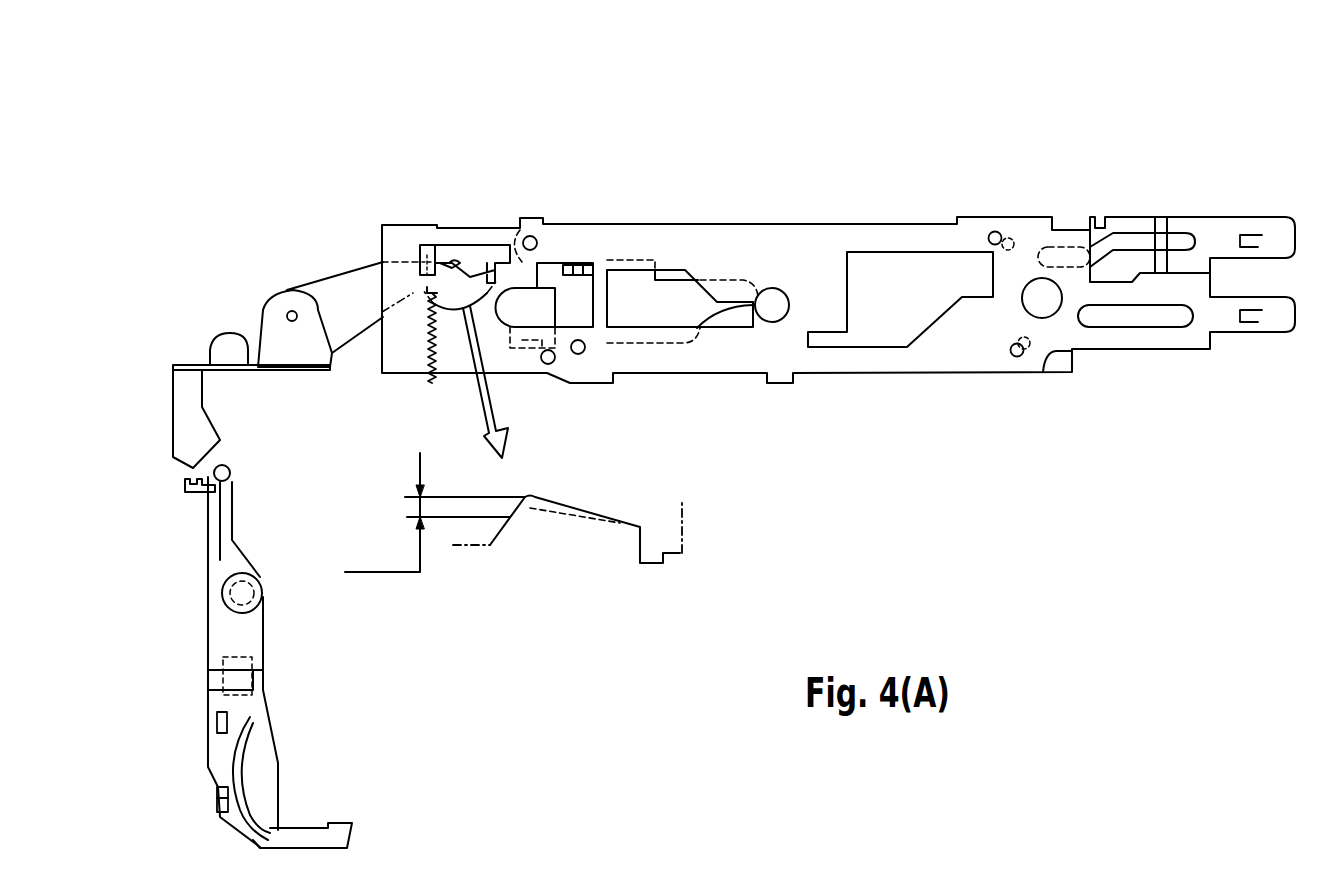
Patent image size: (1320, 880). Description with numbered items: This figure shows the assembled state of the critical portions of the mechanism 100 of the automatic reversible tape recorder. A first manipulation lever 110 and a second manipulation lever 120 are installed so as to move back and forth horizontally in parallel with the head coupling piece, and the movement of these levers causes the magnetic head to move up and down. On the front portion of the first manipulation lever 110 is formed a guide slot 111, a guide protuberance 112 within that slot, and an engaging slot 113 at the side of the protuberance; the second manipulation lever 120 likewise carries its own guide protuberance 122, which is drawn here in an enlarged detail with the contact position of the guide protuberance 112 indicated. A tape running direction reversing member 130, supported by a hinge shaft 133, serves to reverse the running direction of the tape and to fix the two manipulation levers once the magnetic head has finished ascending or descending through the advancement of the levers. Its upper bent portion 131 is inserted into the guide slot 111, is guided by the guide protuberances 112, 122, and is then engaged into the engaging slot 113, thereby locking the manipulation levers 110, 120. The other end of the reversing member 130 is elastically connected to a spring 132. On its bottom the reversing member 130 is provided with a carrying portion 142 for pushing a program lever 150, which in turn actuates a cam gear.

The head actuator assembly 100 is at (922, 152).
The first manipulation lever 110 is at (1135, 222).
The guide slot 111 is at (488, 277).
The guide protuberance 112 is at (450, 262).
The engaging slot 113 is at (520, 228).
The second manipulation lever 120 is at (1143, 352).
The guide protuberance 122 is at (567, 505).
The tape running direction reversing member 130 is at (192, 362).
The upper bent portion 131 is at (436, 262).
The spring 132 is at (425, 347).
The hinge shaft 133 is at (292, 311).
The carrying portion 142 is at (217, 443).
The program lever 150 is at (250, 632).